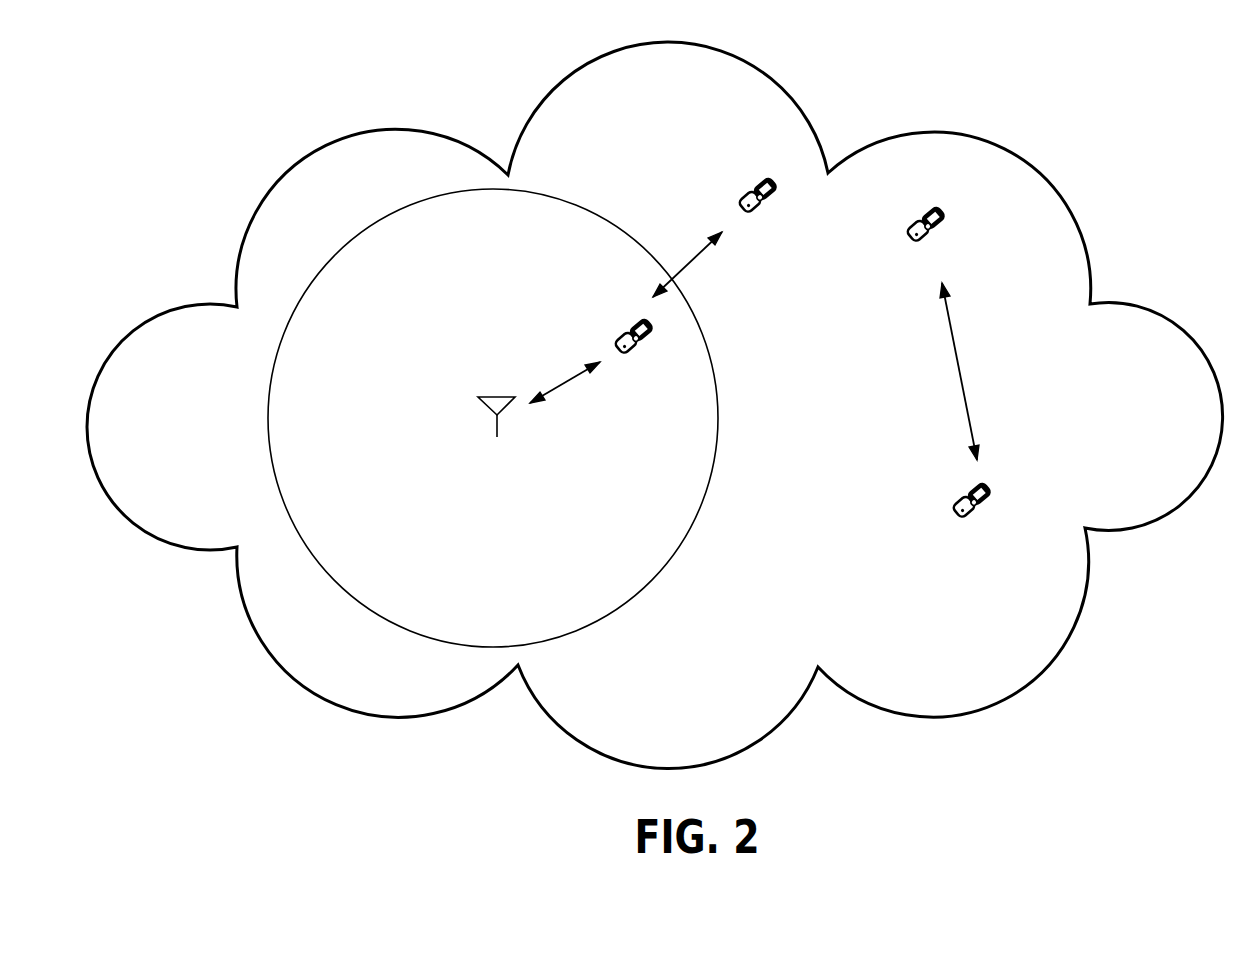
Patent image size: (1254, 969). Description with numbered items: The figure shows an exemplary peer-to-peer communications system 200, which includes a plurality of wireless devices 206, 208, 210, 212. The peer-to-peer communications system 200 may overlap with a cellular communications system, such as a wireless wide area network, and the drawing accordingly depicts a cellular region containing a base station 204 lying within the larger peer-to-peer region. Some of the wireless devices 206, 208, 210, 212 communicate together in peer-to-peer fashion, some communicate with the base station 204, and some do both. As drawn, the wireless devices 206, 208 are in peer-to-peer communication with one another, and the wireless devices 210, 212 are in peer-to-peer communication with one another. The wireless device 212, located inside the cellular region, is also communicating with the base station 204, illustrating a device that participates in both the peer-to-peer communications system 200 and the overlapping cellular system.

The peer-to-peer communications system 200 is at (1084, 99).
The base station 204 is at (497, 435).
The wireless device 206 is at (941, 332).
The wireless device 208 is at (972, 516).
The wireless device 210 is at (716, 236).
The wireless device 212 is at (592, 360).